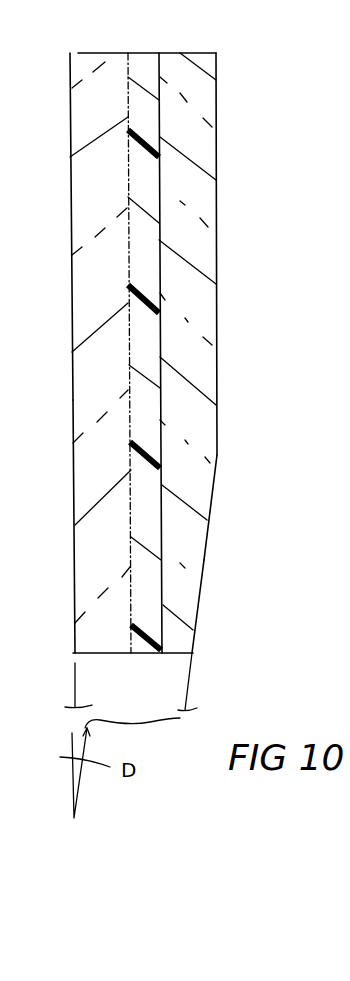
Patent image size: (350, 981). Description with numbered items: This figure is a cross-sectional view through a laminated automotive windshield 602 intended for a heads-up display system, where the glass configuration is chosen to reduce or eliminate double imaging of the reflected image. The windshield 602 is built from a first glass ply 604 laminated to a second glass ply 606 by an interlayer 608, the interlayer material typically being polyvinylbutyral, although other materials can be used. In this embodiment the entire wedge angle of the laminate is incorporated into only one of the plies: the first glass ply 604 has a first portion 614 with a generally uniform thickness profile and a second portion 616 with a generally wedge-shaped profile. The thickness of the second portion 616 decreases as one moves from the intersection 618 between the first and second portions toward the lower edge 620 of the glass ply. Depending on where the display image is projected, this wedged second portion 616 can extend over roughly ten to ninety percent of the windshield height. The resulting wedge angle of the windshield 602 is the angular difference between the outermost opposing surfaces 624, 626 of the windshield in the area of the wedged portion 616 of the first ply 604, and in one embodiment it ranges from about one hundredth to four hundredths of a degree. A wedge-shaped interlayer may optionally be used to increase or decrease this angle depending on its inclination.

The windshield 602 is at (254, 57).
The first glass ply 604 is at (216, 155).
The second glass ply 606 is at (70, 92).
The interlayer 608 is at (158, 200).
The first portion 614 is at (216, 325).
The second portion 616 is at (207, 558).
The intersection 618 is at (217, 447).
The lower edge 620 is at (183, 654).
The outermost opposing surface 624 is at (198, 603).
The outermost opposing surface 626 is at (75, 583).